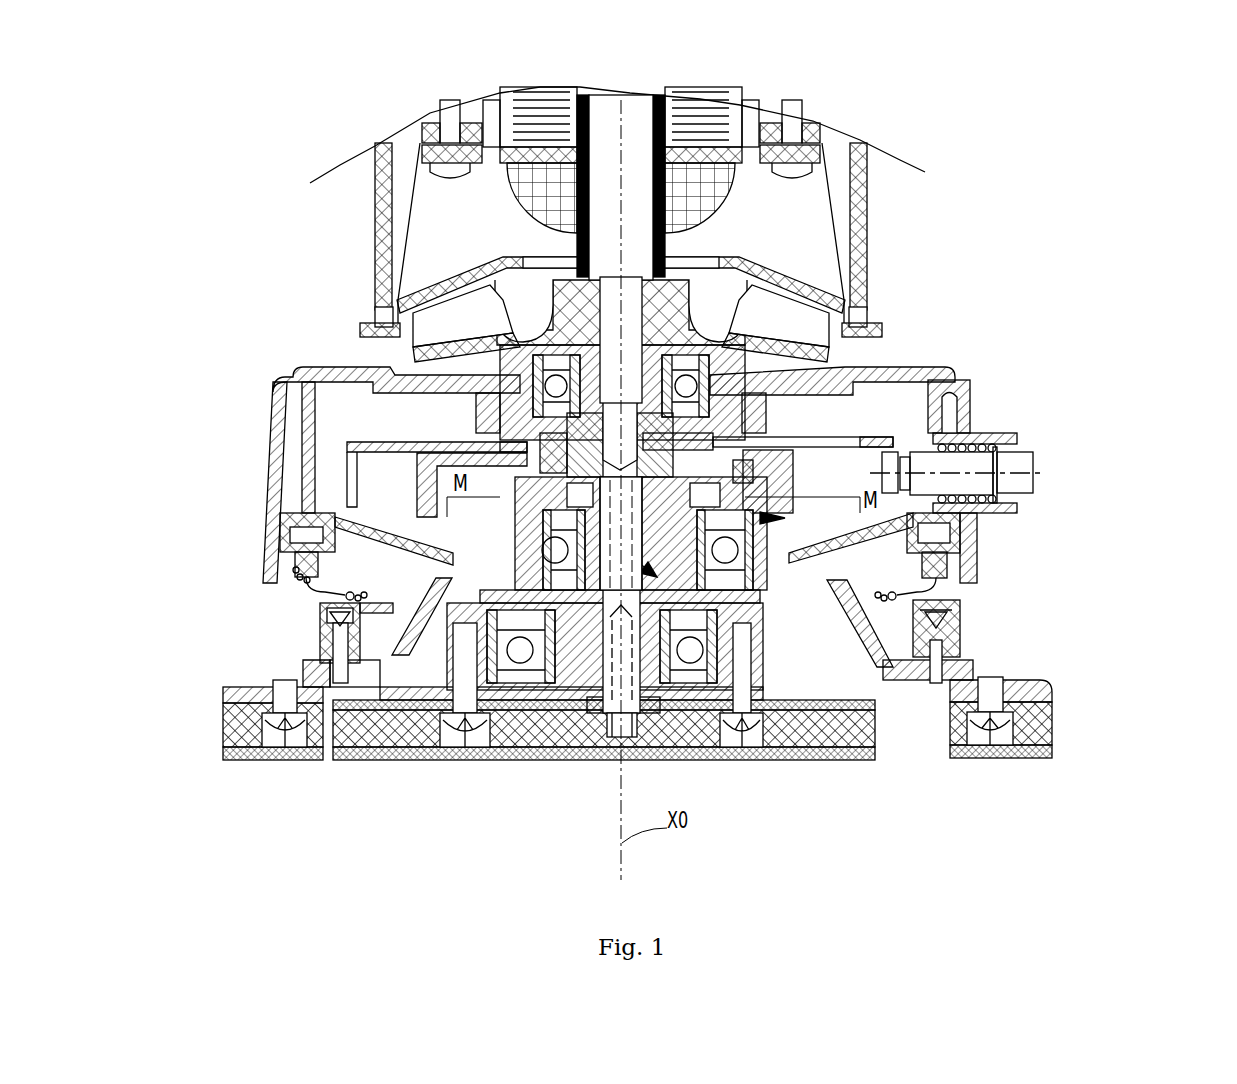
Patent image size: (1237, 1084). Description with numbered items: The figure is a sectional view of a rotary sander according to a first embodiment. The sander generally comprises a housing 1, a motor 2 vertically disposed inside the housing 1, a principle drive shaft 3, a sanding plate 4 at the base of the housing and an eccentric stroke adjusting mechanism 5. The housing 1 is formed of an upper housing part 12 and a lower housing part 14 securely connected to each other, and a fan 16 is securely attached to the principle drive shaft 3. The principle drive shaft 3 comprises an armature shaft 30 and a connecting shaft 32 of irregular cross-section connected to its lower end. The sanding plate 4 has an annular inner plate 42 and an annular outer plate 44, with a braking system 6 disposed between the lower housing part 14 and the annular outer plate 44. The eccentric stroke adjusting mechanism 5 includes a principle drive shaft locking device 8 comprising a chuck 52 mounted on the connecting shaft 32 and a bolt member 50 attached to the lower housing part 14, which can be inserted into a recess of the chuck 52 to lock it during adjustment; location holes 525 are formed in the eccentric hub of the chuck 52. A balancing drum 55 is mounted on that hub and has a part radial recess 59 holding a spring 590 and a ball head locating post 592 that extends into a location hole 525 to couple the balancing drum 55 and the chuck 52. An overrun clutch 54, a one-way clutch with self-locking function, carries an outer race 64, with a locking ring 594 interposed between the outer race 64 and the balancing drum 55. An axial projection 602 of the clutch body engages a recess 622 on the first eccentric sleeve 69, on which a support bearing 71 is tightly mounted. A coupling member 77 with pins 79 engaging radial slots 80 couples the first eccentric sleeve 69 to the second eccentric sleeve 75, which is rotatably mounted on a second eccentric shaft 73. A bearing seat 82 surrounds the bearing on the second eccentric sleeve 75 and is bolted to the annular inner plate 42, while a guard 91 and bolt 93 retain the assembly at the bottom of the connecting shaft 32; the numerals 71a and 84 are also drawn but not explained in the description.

The housing 1 is at (252, 333).
The motor 2 is at (685, 190).
The principle drive shaft 3 is at (800, 583).
The sanding plate 4 is at (1042, 822).
The eccentric stroke adjusting mechanism 5 is at (953, 567).
The braking system 6 is at (977, 532).
The principle drive shaft locking device 8 is at (1157, 520).
The upper housing part 12 is at (374, 240).
The lower housing part 14 is at (333, 365).
The fan 16 is at (778, 318).
The armature shaft 30 is at (630, 300).
The connecting shaft 32 is at (880, 368).
The annular inner plate 42 is at (817, 760).
The annular outer plate 44 is at (1020, 737).
The bolt member 50 is at (973, 487).
The chuck 52 is at (893, 433).
The overrun clutch 54 is at (302, 510).
The balancing drum 55 is at (417, 482).
The part radial recess 59 is at (503, 448).
The spring 590 is at (527, 450).
The ball head locating post 592 is at (545, 452).
The locking ring 594 is at (306, 580).
The location holes 525 is at (708, 434).
The recess 622 is at (720, 447).
The outer race 64 is at (743, 497).
The first eccentric sleeve 69 is at (523, 543).
The axial projection 602 is at (758, 540).
The support bearing 71 is at (455, 557).
The cover plate edge 71a is at (823, 740).
The second eccentric shaft 73 is at (577, 655).
The second eccentric sleeve 75 is at (483, 760).
The coupling member 77 is at (720, 615).
The pin 79 is at (760, 597).
The radial slot 80 is at (433, 745).
The bearing seat 82 is at (317, 630).
The fastening bolt 84 is at (760, 757).
The guard 91 is at (693, 747).
The bolt 93 is at (627, 683).